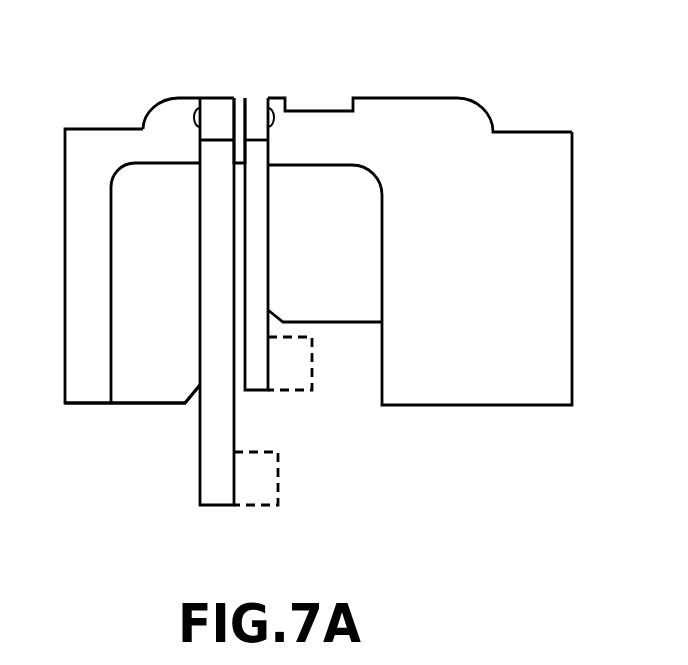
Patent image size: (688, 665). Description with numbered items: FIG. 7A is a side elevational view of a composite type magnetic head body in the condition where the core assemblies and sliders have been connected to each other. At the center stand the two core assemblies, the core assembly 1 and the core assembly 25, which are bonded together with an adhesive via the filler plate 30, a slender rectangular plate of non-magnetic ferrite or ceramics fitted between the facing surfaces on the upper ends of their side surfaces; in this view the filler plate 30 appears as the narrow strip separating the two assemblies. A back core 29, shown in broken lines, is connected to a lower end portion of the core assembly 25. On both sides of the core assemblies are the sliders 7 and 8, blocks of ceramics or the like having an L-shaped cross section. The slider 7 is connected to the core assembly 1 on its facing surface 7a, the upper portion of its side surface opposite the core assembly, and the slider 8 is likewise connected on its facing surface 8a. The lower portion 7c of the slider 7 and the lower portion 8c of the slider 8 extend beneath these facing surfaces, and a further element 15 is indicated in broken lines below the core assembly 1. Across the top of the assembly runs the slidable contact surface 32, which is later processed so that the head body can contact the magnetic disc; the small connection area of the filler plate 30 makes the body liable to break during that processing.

The core assembly 1 is at (212, 100).
The slider 7 is at (76, 241).
The facing surface 7a is at (200, 107).
The first housing leg 7c is at (161, 392).
The slider 8 is at (563, 240).
The facing surface 8a is at (288, 104).
The second housing shelf 8c is at (338, 310).
The lower component (phantom) 15 is at (267, 483).
The core assembly 25 is at (252, 107).
The back core 29 is at (288, 377).
The filler plate 30 is at (243, 97).
The slidable contact surface 32 is at (463, 99).